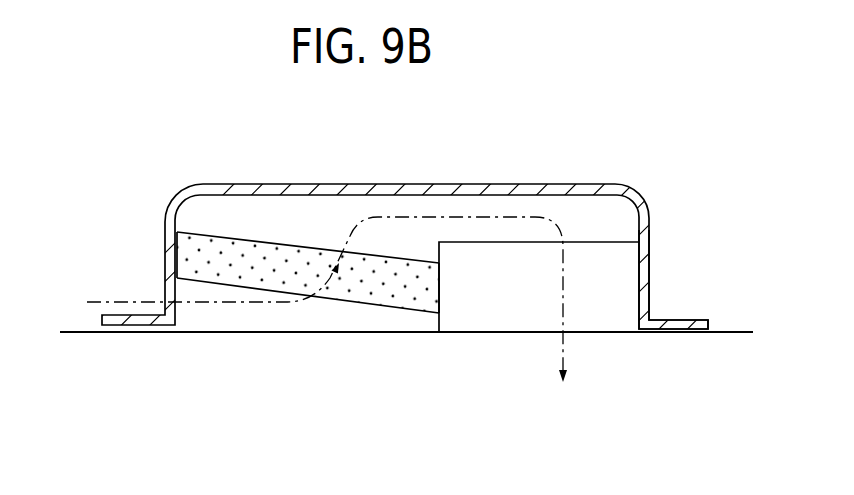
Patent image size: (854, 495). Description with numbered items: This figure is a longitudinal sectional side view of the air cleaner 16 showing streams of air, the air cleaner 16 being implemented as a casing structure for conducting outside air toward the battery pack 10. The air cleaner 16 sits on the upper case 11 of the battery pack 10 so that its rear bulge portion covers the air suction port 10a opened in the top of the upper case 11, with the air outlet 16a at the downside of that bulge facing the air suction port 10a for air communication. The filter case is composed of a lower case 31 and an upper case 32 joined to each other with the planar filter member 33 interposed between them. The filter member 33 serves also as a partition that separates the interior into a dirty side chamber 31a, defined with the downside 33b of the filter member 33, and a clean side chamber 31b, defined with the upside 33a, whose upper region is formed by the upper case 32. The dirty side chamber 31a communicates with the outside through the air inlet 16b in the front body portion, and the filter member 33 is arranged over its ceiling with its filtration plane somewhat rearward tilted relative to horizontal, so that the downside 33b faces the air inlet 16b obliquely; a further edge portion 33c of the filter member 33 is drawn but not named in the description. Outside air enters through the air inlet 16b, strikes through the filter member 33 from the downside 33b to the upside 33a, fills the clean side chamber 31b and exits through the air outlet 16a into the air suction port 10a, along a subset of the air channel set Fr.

The battery pack 10 is at (420, 467).
The air suction port 10a is at (609, 359).
The upper case 11 is at (82, 333).
The air cleaner 16 is at (466, 215).
The air outlet 16a is at (611, 301).
The air inlet 16b is at (190, 293).
The lower case 31 is at (643, 305).
The dirty side chamber 31a is at (216, 322).
The clean side chamber 31b is at (503, 322).
The upper case 32 is at (641, 202).
The filter member 33 is at (270, 272).
The upside of filter member 33a is at (263, 234).
The downside of filter member 33b is at (326, 298).
The end face of filter 33c is at (172, 246).
The air channel set Fr is at (560, 350).